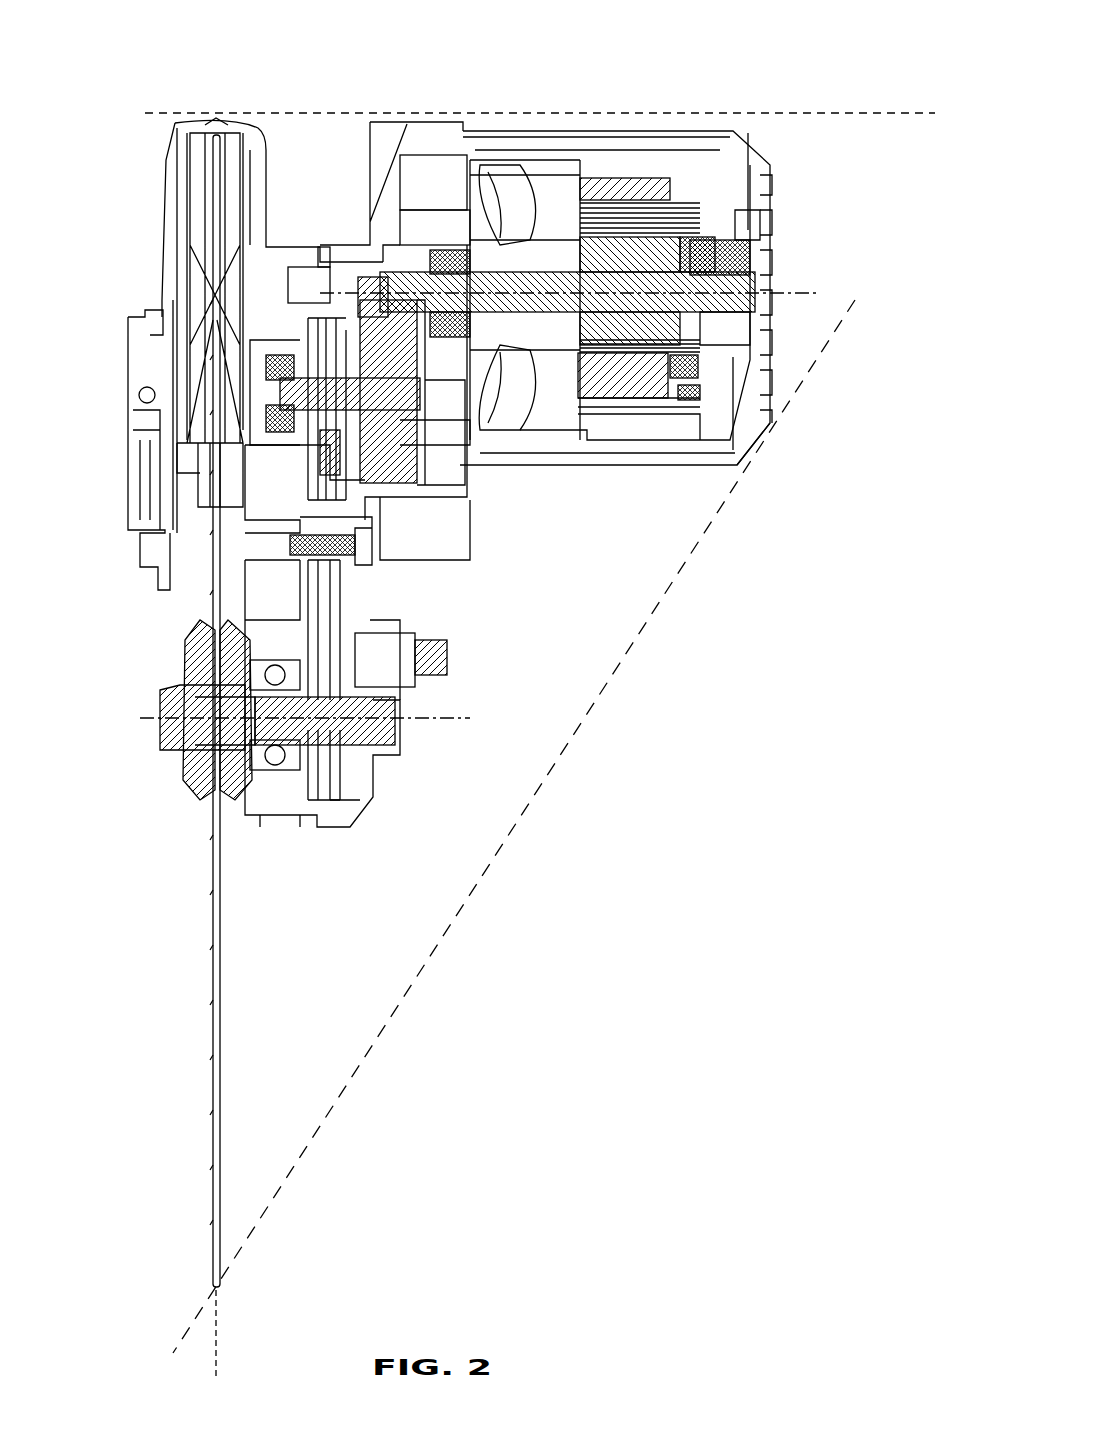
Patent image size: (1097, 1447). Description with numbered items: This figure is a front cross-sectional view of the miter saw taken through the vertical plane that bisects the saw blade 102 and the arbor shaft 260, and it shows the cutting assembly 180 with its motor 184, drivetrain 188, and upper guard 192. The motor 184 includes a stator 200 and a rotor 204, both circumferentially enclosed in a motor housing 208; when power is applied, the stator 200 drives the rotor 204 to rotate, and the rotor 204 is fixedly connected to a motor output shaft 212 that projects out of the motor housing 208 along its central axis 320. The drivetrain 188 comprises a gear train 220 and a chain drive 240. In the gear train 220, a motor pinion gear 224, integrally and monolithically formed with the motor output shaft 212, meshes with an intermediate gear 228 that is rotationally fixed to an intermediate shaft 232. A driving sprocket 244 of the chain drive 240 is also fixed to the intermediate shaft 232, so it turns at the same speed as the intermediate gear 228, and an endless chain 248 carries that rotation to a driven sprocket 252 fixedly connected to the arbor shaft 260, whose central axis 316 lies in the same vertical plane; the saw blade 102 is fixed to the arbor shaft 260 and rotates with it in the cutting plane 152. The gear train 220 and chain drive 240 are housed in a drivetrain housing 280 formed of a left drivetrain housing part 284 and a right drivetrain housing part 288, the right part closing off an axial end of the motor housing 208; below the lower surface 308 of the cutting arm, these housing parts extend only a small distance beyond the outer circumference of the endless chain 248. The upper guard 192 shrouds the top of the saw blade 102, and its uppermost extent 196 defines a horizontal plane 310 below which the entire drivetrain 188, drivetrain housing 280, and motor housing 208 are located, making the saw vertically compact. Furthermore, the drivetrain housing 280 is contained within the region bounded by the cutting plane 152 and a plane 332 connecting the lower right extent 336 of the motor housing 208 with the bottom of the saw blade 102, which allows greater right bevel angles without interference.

The saw blade 102 is at (213, 213).
The cutting plane 152 is at (219, 1328).
The cutting assembly 180 is at (812, 80).
The motor 184 is at (616, 148).
The drivetrain 188 is at (405, 495).
The upper guard 192 is at (178, 153).
The uppermost extent 196 is at (218, 105).
The stator 200 is at (650, 380).
The rotor 204 is at (680, 260).
The motor housing 208 is at (678, 128).
The motor output shaft 212 is at (525, 270).
The gear train 220 is at (343, 275).
The motor pinion gear 224 is at (388, 265).
The intermediate gear 228 is at (395, 452).
The intermediate shaft 232 is at (392, 400).
The chain drive 240 is at (372, 788).
The driving sprocket 244 is at (310, 338).
The endless chain 248 is at (338, 634).
The driven sprocket 252 is at (355, 760).
The arbor shaft 260 is at (360, 713).
The drivetrain housing 280 is at (322, 852).
The left drivetrain housing part 284 is at (270, 828).
The right drivetrain housing part 288 is at (355, 812).
The lower surface 308 is at (400, 540).
The horizontal plane 310 is at (320, 112).
The central axis 316 is at (428, 722).
The central axis 320 is at (838, 289).
The plane 332 is at (300, 1163).
The lower right extent 336 is at (775, 432).